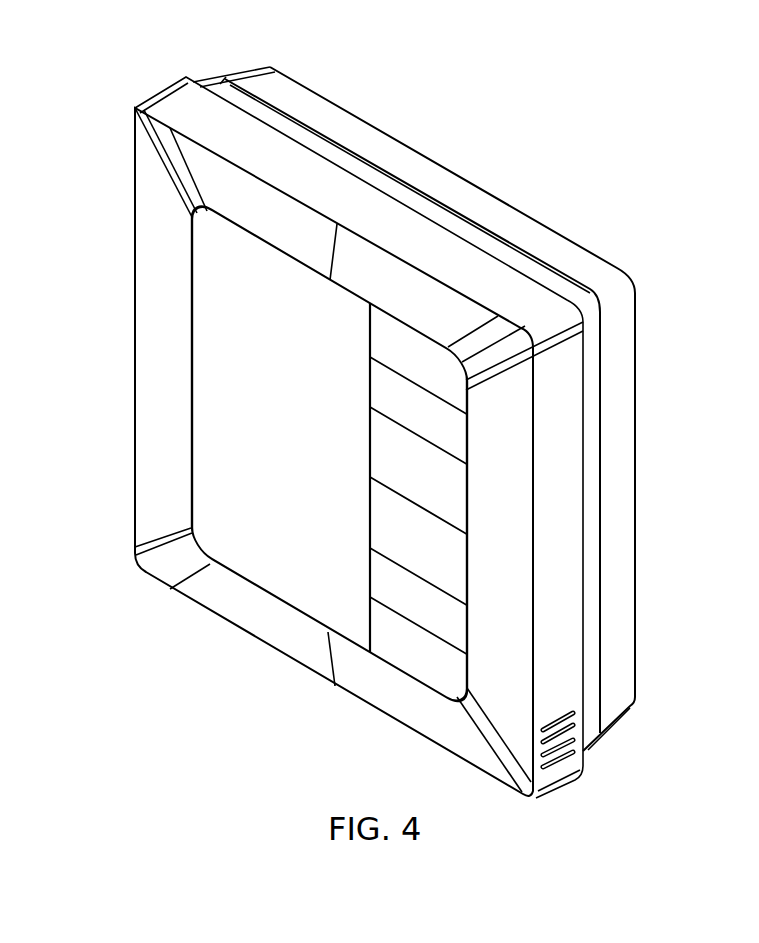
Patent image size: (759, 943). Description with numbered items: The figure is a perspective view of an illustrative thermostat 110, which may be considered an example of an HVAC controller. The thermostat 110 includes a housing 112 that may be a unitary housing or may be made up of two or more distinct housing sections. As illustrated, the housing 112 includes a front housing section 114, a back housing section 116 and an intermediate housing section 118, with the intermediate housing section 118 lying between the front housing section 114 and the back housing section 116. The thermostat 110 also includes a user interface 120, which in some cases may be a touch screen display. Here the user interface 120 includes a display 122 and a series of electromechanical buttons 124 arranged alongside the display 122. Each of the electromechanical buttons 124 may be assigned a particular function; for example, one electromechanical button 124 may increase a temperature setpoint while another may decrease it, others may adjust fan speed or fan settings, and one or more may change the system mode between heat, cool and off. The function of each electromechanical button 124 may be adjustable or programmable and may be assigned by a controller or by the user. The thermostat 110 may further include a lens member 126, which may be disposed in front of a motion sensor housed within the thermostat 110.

The thermostat 110 is at (398, 409).
The housing 112 is at (391, 409).
The front housing section 114 is at (145, 238).
The back housing section 116 is at (610, 480).
The intermediate housing section 118 is at (408, 197).
The user interface 120 is at (174, 616).
The display 122 is at (293, 468).
The electromechanical buttons 124 is at (398, 688).
The lens member 126 is at (436, 610).